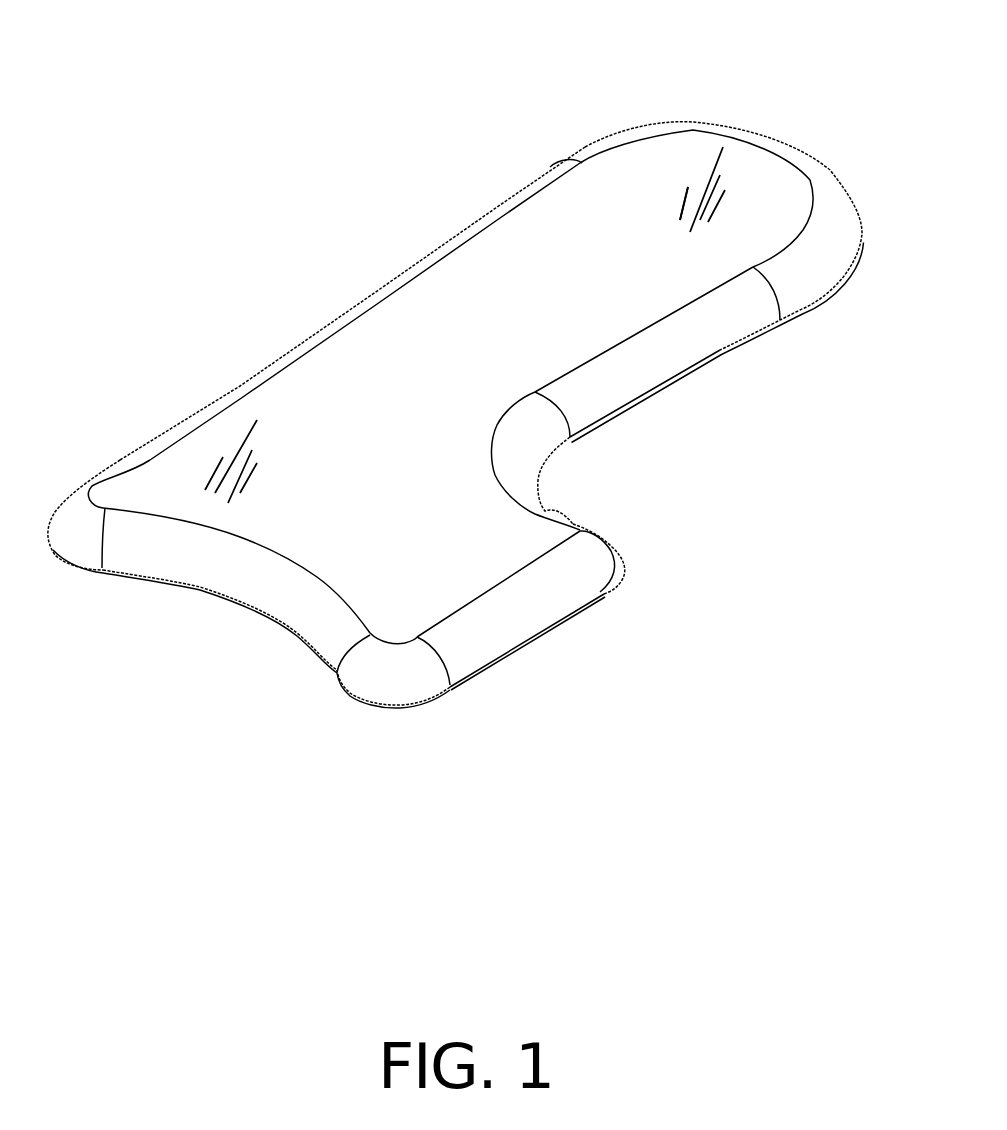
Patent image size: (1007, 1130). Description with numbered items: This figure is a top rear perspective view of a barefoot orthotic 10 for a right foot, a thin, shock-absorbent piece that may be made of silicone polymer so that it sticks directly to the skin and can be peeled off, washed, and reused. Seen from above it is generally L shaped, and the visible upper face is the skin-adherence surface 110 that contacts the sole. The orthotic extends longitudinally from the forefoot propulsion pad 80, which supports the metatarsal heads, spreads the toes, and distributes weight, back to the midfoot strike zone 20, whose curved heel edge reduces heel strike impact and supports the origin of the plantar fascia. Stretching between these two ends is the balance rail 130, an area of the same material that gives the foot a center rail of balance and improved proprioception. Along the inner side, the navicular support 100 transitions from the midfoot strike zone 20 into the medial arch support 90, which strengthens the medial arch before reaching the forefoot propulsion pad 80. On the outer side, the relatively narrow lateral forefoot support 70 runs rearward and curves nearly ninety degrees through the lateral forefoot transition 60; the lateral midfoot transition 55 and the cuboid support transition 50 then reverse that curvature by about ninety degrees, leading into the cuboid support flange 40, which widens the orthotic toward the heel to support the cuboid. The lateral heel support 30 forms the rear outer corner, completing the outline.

The barefoot orthotic 10 is at (223, 823).
The midfoot strike zone 20 is at (217, 625).
The lateral heel support 30 is at (368, 737).
The cuboid support flange 40 is at (547, 683).
The cuboid support transition 50 is at (660, 563).
The lateral midfoot transition 55 is at (622, 512).
The lateral forefoot transition 60 is at (603, 483).
The lateral forefoot support 70 is at (700, 383).
The forefoot propulsion pad 80 is at (805, 115).
The medial arch support 90 is at (275, 323).
The navicular support 100 is at (47, 472).
The skin-adherence surface 110 is at (446, 367).
The balance rail 130 is at (295, 457).